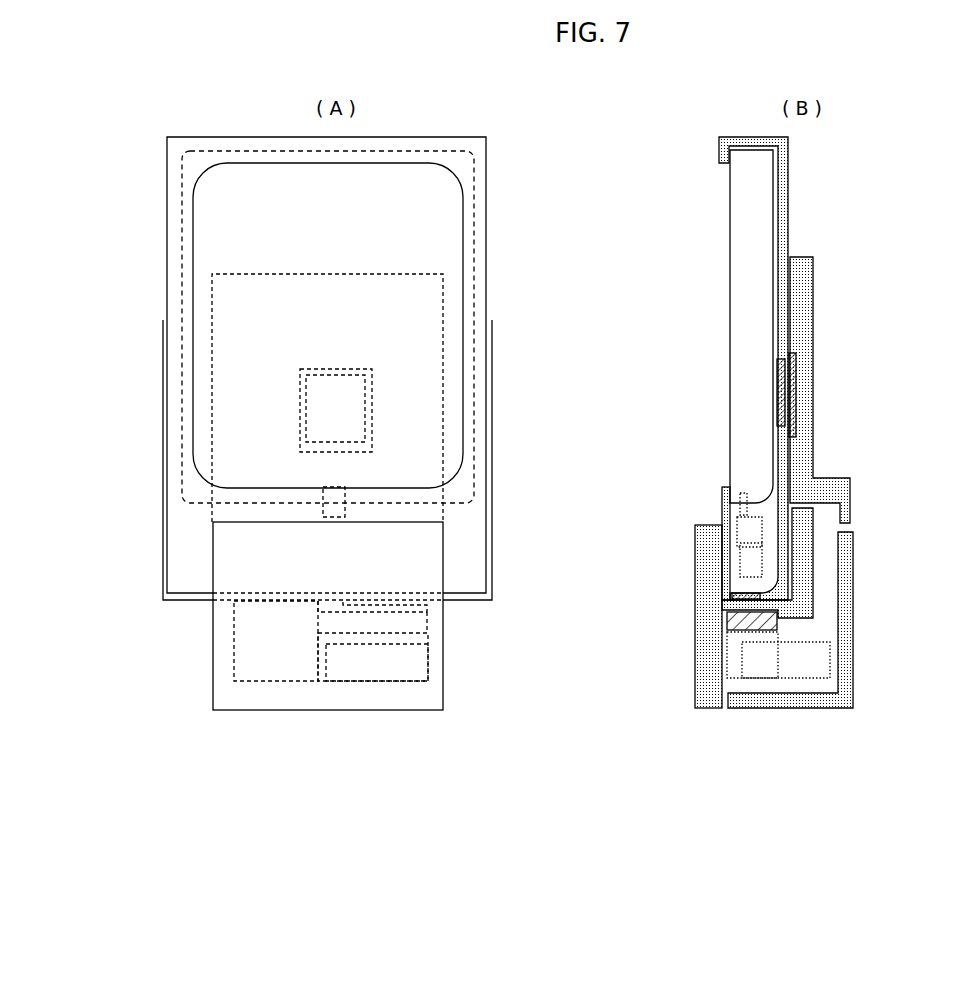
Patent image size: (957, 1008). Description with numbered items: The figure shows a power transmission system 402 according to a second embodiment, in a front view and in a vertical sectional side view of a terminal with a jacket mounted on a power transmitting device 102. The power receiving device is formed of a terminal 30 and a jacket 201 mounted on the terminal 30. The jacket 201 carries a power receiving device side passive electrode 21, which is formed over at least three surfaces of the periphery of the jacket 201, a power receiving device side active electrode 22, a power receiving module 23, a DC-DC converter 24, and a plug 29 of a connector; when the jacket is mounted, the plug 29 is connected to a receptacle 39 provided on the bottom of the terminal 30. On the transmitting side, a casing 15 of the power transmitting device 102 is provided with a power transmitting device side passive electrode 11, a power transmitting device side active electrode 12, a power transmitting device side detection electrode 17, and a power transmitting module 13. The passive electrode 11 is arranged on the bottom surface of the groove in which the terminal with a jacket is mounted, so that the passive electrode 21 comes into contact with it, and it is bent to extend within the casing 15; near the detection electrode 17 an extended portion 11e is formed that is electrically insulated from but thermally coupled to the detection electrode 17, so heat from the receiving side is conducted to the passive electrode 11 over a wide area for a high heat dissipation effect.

The power transmission system 402 is at (210, 99).
The power transmitting device 102 is at (196, 628).
The jacket 201 is at (486, 288).
The power receiving device side passive electrode 21 is at (492, 450).
The casing 15 is at (445, 678).
The terminal 30 is at (408, 177).
The power transmitting device side active electrode 12 is at (363, 368).
The power receiving device side active electrode 22 is at (315, 408).
The receptacle 39 is at (345, 497).
The plug 29 is at (340, 512).
The power receiving module 23 is at (722, 532).
The DC-DC converter 24 is at (735, 562).
The power transmitting device side detection electrode 17 is at (428, 603).
The extended portion 11e is at (428, 632).
The power transmitting device side passive electrode 11 is at (232, 672).
The power transmitting module 13 is at (383, 681).